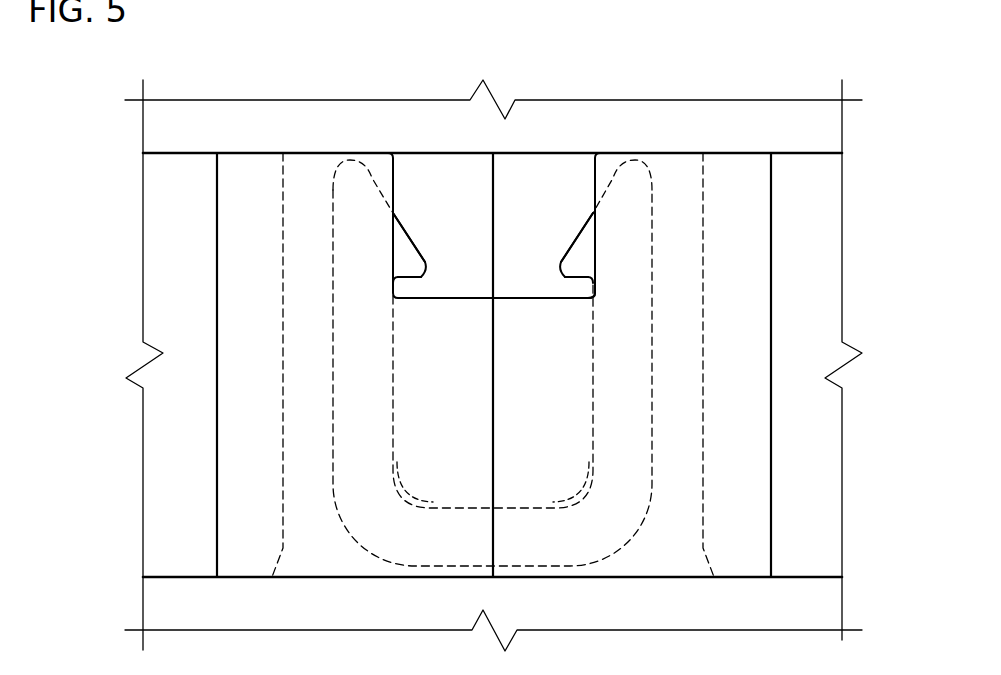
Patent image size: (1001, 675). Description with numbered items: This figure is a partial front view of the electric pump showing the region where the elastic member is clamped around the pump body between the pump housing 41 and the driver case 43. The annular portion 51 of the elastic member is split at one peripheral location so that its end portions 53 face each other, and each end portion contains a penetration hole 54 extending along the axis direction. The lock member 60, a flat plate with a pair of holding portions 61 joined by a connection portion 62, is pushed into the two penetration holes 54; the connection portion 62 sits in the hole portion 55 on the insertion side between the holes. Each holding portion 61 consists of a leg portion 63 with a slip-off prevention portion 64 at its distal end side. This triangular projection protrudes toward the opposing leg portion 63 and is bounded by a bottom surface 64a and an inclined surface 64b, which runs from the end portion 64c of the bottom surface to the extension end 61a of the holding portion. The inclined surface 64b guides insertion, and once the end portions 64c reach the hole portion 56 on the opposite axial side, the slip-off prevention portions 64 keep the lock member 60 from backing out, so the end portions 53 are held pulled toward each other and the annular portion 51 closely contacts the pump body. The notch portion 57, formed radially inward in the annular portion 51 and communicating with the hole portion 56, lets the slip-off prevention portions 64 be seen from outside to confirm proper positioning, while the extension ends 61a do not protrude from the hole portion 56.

The pump housing 41 is at (797, 117).
The driver case 43 is at (832, 603).
The annular portion 51 is at (822, 436).
The end portions 53 is at (305, 205).
The penetration holes 54 is at (313, 553).
The hole portion 55 is at (450, 573).
The hole portion 56 is at (560, 180).
The notch portion 57 is at (392, 176).
The lock member 60 is at (333, 430).
The holding portions 61 is at (493, 395).
The extension end 61a is at (352, 158).
The connection portion 62 is at (528, 548).
The leg portion 63 is at (345, 296).
The slip-off prevention portion 64 is at (403, 249).
The bottom surface 64a is at (578, 284).
The inclined surface 64b is at (577, 220).
The end portion 64c is at (557, 276).